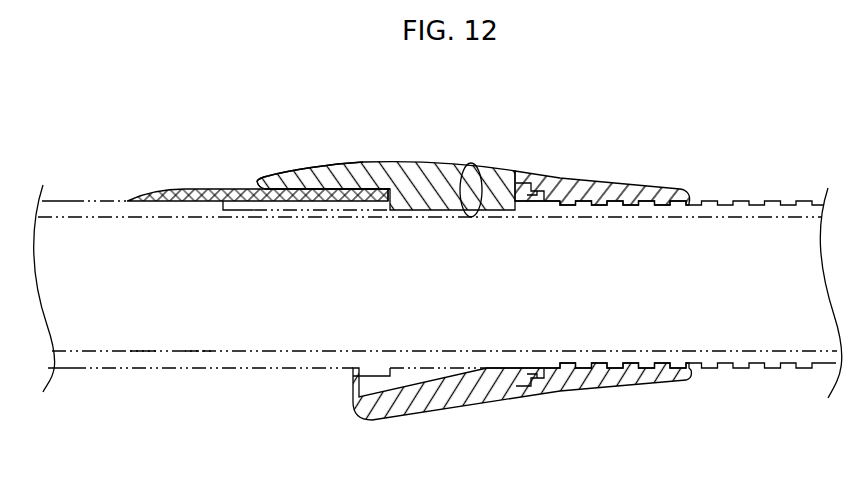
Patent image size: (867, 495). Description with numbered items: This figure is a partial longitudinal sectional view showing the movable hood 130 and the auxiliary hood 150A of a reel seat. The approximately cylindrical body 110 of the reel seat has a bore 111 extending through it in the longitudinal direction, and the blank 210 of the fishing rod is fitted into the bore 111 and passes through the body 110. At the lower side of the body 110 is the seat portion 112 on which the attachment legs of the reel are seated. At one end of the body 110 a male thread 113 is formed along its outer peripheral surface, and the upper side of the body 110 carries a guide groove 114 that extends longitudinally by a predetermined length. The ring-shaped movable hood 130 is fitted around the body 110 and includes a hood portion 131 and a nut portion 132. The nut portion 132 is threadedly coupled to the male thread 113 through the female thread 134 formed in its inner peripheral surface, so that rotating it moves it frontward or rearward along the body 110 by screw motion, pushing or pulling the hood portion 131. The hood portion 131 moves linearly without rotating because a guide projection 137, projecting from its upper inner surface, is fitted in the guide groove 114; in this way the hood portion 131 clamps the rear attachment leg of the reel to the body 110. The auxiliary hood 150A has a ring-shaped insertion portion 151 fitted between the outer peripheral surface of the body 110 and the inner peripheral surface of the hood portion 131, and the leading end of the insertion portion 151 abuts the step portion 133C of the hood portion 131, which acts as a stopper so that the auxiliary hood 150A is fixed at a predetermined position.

The body 110 is at (85, 207).
The bore 111 is at (200, 351).
The seat portion 112 is at (345, 372).
The male thread 113 is at (768, 200).
The guide groove 114 is at (278, 210).
The movable hood 130 is at (513, 168).
The hood portion 131 is at (433, 173).
The nut portion 132 is at (595, 185).
The step portion 133C is at (363, 193).
The female thread 134 is at (646, 202).
The guide projection 137 is at (476, 163).
The auxiliary hood 150A is at (203, 189).
The insertion portion 151 is at (333, 193).
The blank 210 is at (145, 313).